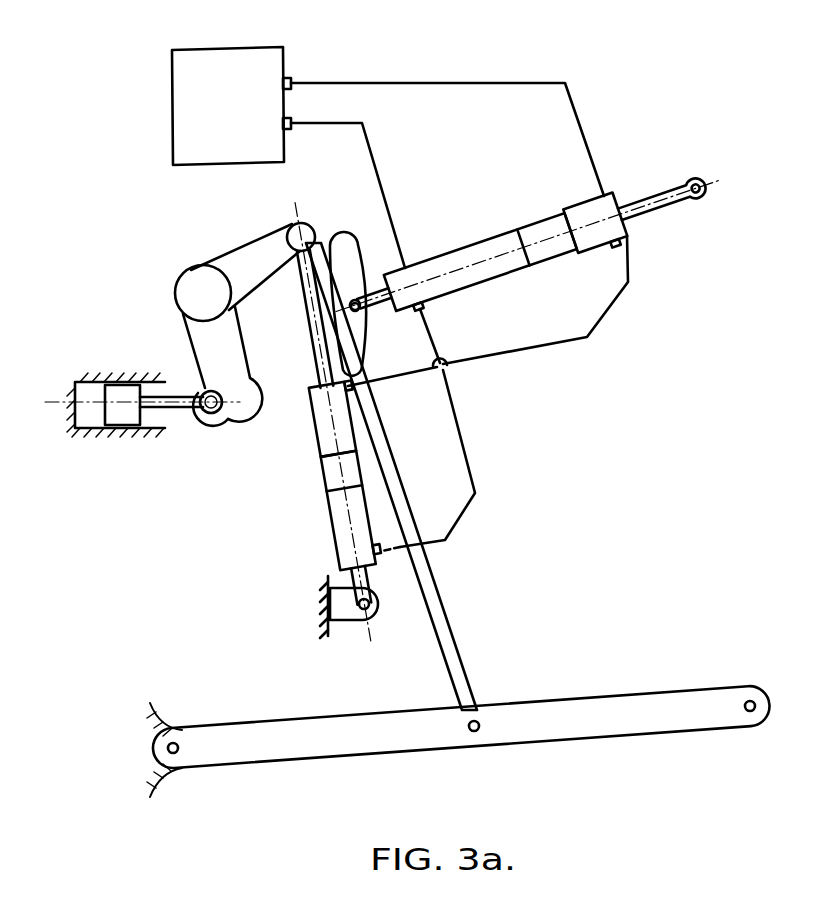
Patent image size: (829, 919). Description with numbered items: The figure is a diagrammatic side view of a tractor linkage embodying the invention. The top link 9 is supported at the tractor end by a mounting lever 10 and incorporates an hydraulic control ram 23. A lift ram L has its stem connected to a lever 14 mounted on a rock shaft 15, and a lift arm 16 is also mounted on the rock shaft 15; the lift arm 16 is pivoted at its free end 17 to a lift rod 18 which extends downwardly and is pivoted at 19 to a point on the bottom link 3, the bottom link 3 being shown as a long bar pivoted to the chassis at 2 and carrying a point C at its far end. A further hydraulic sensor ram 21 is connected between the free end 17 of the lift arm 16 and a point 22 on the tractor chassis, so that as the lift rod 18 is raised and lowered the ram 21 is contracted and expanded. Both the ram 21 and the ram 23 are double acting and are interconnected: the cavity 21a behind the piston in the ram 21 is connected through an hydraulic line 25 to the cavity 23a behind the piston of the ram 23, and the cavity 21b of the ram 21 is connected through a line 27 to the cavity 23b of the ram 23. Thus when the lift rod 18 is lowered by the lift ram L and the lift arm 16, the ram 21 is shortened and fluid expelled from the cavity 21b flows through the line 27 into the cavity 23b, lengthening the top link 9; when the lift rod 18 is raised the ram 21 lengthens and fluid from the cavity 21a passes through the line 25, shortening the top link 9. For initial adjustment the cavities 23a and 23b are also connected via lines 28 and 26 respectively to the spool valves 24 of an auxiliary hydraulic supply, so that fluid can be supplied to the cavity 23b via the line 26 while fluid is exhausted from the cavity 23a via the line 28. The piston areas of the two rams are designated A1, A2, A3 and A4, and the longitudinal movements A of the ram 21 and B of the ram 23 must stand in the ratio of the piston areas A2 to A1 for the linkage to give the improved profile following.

The fixed pivot 2 is at (180, 740).
The bottom link 3 is at (603, 705).
The top link 9 is at (487, 190).
The mounting lever 10 is at (362, 243).
The lever 14 is at (190, 356).
The rock shaft 15 is at (195, 288).
The lift arm 16 is at (243, 240).
The free end of lift arm 17 is at (304, 224).
The lift rod 18 is at (374, 441).
The pivot 19 is at (480, 722).
The hydraulic sensor ram 21 is at (330, 520).
The cavity behind the piston in ram 21 21a is at (313, 415).
The cavity of ram 21 21b is at (336, 556).
The point on the tractor chassis 22 is at (373, 612).
The hydraulic control ram 23 is at (490, 295).
The cavity behind the piston of ram 23 23a is at (591, 210).
The cavity of ram 23 23b is at (450, 246).
The spool valves 24 is at (243, 48).
The hydraulic line 25 is at (550, 344).
The line 26 is at (373, 163).
The line 27 is at (464, 448).
The line 28 is at (598, 172).
The longitudinal movement of ram 21 A is at (311, 494).
The piston area A1 is at (328, 495).
The piston area A2 is at (530, 256).
The piston area A3 is at (320, 460).
The piston area A4 is at (604, 258).
The longitudinal movement of ram 23 B is at (556, 208).
The load point C is at (750, 700).
The lift ram L is at (86, 374).